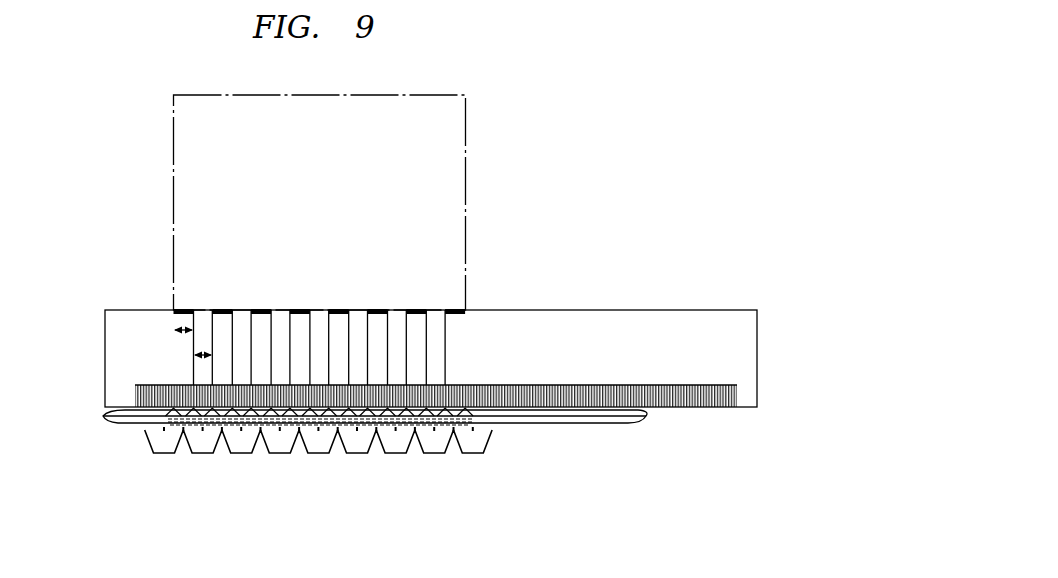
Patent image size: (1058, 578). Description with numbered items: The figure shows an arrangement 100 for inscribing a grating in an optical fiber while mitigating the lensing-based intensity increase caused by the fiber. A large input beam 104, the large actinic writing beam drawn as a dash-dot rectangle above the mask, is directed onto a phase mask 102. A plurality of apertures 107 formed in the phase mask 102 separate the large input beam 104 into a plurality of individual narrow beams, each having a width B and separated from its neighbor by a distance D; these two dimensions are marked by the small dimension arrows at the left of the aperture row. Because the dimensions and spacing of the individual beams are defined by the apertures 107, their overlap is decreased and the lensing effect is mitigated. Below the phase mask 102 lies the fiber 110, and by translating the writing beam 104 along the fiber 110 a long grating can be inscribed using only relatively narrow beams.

The arrangement 100 is at (620, 100).
The phase mask 102 is at (708, 310).
The large input beam 104 is at (452, 121).
The apertures 107 is at (413, 310).
The fiber 110 is at (643, 412).
The width B is at (183, 328).
The distance D is at (198, 353).